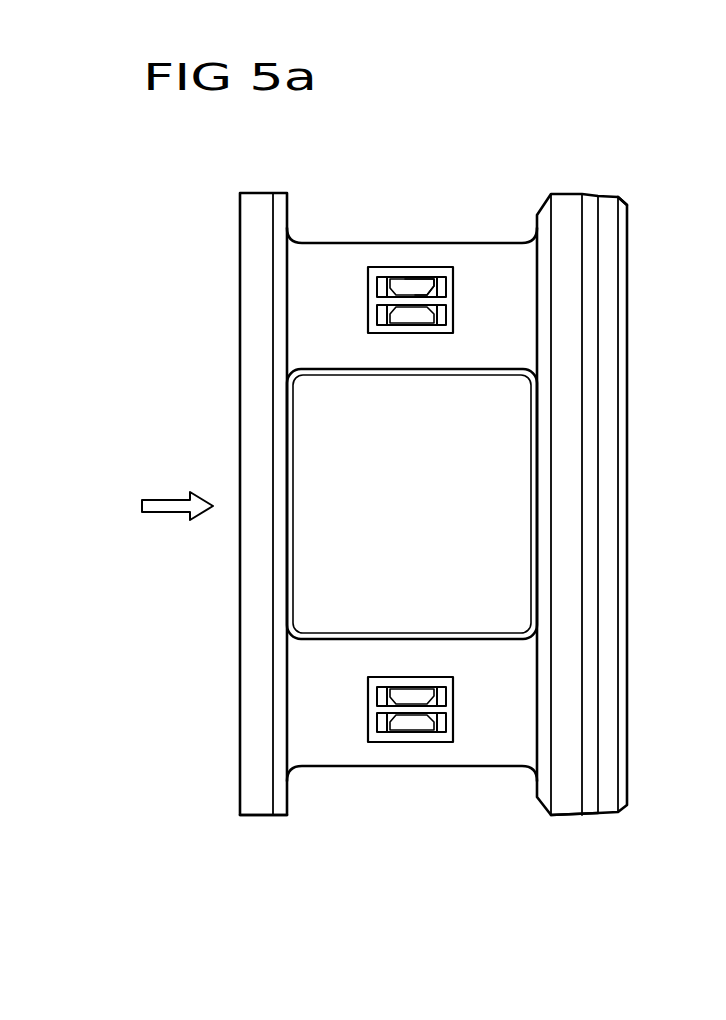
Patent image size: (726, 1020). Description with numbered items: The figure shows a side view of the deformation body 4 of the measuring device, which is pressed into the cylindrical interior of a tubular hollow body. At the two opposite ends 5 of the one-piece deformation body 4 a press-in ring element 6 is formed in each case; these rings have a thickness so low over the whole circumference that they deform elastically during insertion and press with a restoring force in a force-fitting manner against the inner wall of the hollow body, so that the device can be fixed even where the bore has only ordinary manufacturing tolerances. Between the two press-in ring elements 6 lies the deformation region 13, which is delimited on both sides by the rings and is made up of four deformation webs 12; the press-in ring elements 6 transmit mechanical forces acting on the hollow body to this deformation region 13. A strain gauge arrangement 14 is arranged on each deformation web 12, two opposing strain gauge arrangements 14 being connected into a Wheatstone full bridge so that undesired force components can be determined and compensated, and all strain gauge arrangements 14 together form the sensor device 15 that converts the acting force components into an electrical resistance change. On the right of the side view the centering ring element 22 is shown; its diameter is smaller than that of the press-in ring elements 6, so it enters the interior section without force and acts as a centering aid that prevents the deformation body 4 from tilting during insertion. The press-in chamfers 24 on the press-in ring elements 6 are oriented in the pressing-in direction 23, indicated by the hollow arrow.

The deformation body 4 is at (439, 534).
The opposite ends 5 is at (618, 178).
The press-in ring element 6 is at (256, 212).
The deformation web 12 is at (306, 260).
The deformation region 13 is at (410, 842).
The strain gauge arrangement 14 is at (398, 284).
The sensor device 15 is at (422, 285).
The centering ring element 22 is at (612, 215).
The pressing-in direction 23 is at (170, 505).
The press-in chamfer 24 is at (281, 806).